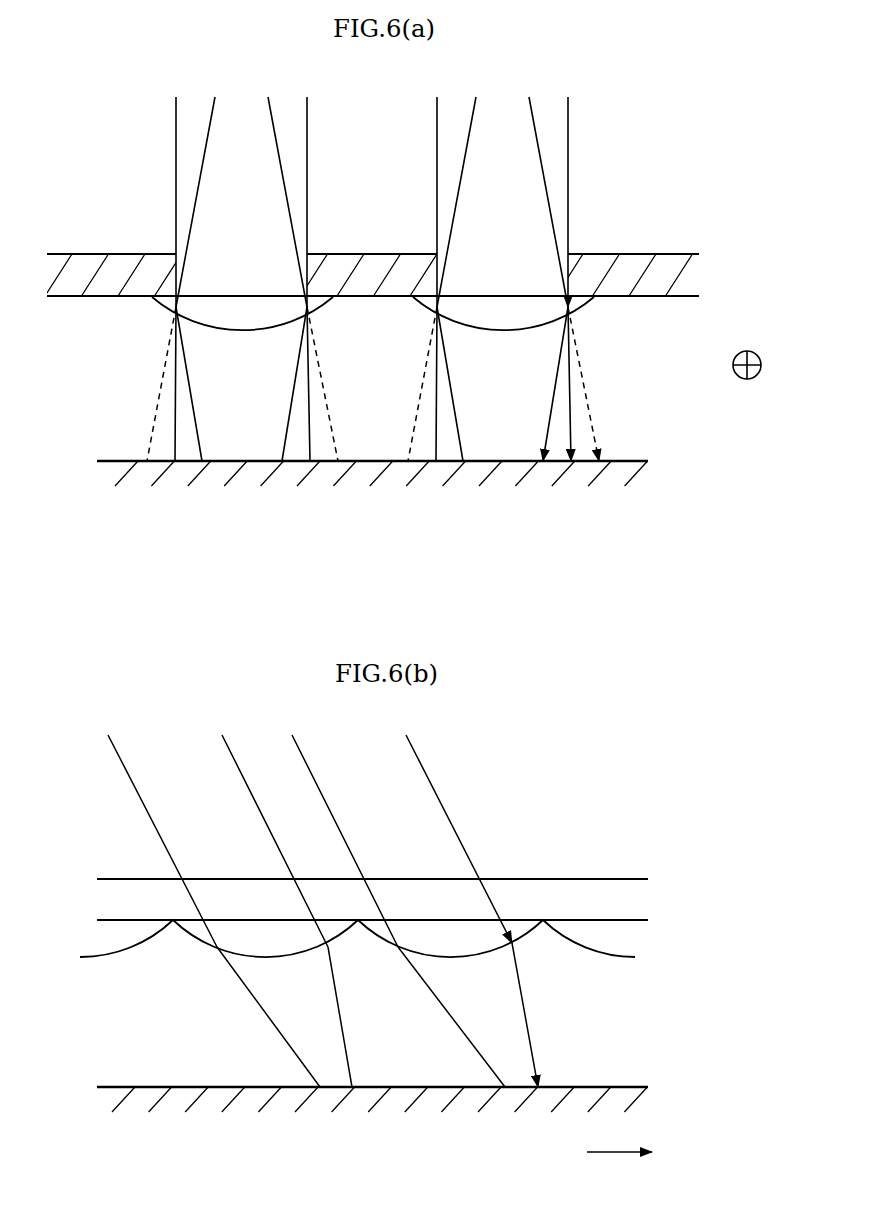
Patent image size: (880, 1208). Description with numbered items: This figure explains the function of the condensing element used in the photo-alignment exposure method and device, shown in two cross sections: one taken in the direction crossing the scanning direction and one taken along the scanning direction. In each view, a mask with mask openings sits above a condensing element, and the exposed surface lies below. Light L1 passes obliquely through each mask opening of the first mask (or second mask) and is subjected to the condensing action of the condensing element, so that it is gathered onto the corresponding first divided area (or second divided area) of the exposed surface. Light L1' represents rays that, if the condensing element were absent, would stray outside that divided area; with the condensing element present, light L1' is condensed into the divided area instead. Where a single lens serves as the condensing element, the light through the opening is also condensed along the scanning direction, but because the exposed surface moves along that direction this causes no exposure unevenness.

The light L1 is at (372, 279).
The straying light L1' is at (376, 384).